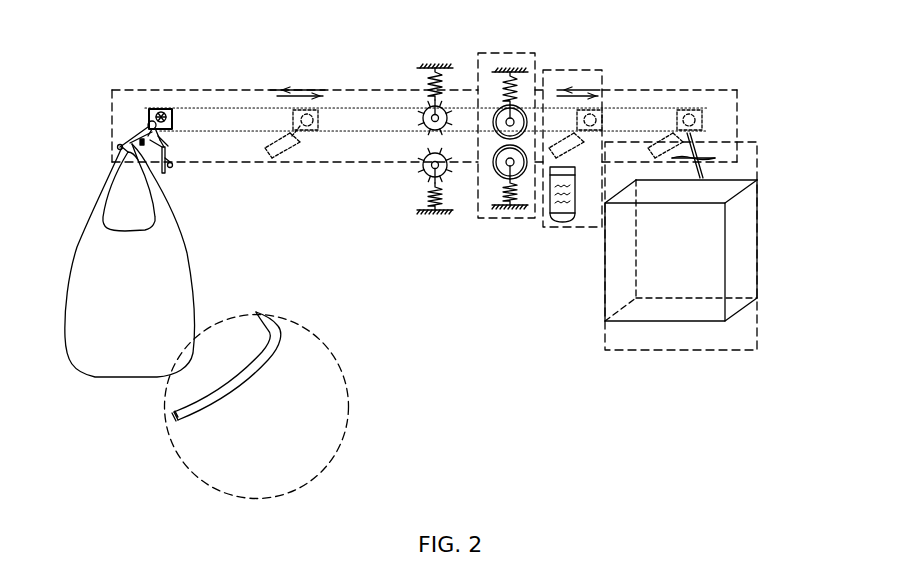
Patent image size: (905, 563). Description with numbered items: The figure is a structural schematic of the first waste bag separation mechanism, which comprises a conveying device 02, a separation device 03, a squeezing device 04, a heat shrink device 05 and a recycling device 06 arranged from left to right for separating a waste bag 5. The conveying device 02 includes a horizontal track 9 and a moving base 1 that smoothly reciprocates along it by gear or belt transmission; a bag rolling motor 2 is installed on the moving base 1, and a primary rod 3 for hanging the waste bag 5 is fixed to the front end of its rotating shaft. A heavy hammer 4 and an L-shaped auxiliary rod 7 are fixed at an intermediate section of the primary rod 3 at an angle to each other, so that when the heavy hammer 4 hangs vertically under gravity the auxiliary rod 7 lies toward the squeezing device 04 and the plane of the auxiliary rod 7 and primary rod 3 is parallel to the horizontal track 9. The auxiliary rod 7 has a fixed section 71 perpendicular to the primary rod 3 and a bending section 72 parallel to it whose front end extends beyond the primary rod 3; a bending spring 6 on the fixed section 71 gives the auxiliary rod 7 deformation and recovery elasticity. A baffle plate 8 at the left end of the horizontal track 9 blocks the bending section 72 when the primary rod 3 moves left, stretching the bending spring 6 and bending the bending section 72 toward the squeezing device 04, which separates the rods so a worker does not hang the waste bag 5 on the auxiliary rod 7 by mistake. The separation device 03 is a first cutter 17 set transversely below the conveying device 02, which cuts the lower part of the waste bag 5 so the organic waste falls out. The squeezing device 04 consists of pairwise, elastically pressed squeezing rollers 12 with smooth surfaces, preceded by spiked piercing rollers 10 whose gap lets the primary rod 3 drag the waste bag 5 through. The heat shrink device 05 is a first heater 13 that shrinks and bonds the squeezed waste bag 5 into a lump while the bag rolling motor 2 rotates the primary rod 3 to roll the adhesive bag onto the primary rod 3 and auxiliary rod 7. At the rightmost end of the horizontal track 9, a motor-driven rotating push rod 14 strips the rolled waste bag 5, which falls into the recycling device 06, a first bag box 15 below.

The moving base 1 is at (150, 109).
The bag rolling motor 2 is at (161, 110).
The primary rod 3 is at (146, 134).
The heavy hammer 4 is at (146, 136).
The waste bag 5 is at (100, 235).
The bending spring 6 is at (157, 142).
The auxiliary rod 7 is at (166, 147).
The fixed section 71 is at (178, 172).
The bending section 72 is at (210, 170).
The baffle plate 8 is at (168, 160).
The horizontal track 9 is at (335, 108).
The piercing rollers 10 is at (423, 110).
The squeezing rollers 12 is at (511, 121).
The first heater 13 is at (568, 180).
The rotating push rod 14 is at (727, 193).
The first bag box 15 is at (758, 160).
The first cutter 17 is at (278, 350).
The conveying device 02 is at (338, 162).
The separation device 03 is at (350, 405).
The squeezing device 04 is at (533, 114).
The heat shrink device 05 is at (620, 119).
The recycling device 06 is at (758, 163).